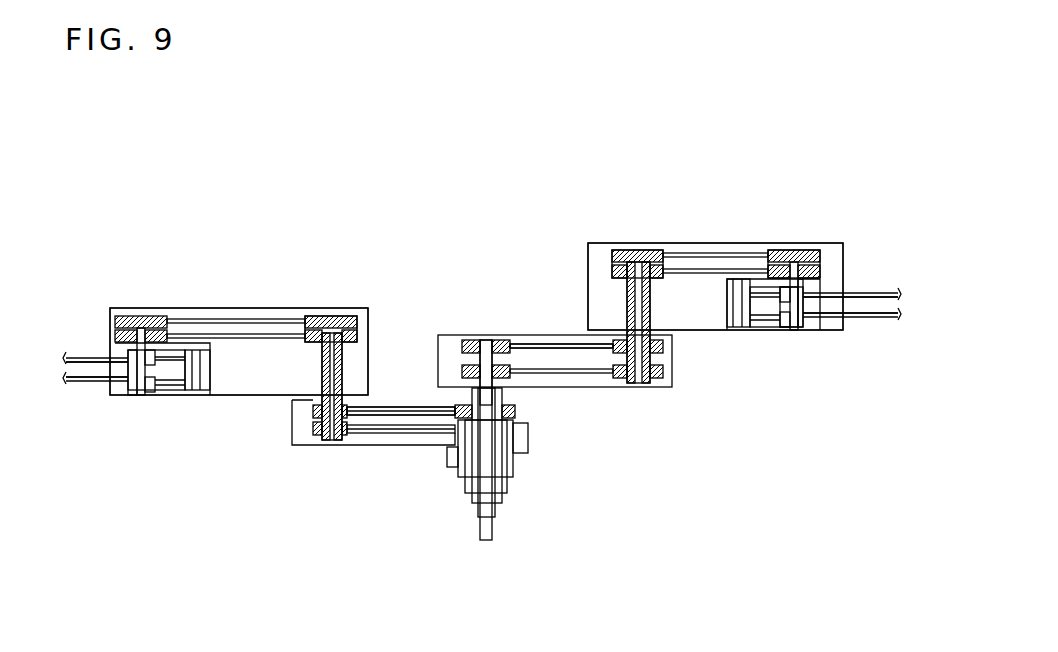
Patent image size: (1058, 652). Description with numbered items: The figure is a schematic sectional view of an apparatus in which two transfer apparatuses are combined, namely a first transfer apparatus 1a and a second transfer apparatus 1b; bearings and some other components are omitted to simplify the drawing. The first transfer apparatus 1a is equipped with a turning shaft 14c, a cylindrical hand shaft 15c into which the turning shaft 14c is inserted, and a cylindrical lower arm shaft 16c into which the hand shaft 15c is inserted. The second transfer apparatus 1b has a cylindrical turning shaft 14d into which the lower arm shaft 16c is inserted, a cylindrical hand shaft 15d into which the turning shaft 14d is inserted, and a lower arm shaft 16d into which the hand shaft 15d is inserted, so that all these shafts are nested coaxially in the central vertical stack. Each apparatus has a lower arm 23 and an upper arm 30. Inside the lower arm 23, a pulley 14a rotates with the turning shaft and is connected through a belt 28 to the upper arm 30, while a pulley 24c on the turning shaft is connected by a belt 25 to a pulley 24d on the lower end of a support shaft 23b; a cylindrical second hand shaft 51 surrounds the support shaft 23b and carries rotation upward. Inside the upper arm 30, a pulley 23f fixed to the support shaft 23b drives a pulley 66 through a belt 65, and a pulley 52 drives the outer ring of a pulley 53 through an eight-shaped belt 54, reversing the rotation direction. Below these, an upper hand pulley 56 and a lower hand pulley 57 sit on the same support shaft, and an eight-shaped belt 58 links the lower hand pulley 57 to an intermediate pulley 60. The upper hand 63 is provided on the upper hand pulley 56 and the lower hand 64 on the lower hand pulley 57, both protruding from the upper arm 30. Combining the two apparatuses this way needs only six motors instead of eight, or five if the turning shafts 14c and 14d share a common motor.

The first transfer apparatus 1a is at (742, 157).
The second transfer apparatus 1b is at (193, 226).
The pulley 14a is at (458, 405).
The turning shaft 14c is at (486, 542).
The turning shaft 14d is at (507, 492).
The hand shaft 15c is at (478, 512).
The hand shaft 15d is at (452, 455).
The lower arm shaft 16c is at (472, 482).
The lower arm shaft 16d is at (505, 467).
The lower arm 23 is at (297, 446).
The support shaft 23b is at (330, 442).
The pulley 23f is at (345, 320).
The pulley 24c is at (468, 340).
The pulley 24d is at (650, 384).
The belt 25 is at (362, 434).
The belt 28 is at (400, 408).
The upper arm 30 is at (118, 308).
The second hand shaft 51 is at (322, 366).
The pulley 52 is at (352, 333).
The pulley 53 is at (830, 266).
The 8-shaped belt 54 is at (283, 318).
The upper hand pulley 56 is at (805, 290).
The lower hand pulley 57 is at (141, 392).
The 8-shaped belt 58 is at (170, 385).
The intermediate pulley 60 is at (203, 382).
The upper hand 63 is at (85, 360).
The lower hand 64 is at (95, 383).
The belt 65 is at (230, 320).
The pulley 66 is at (155, 316).